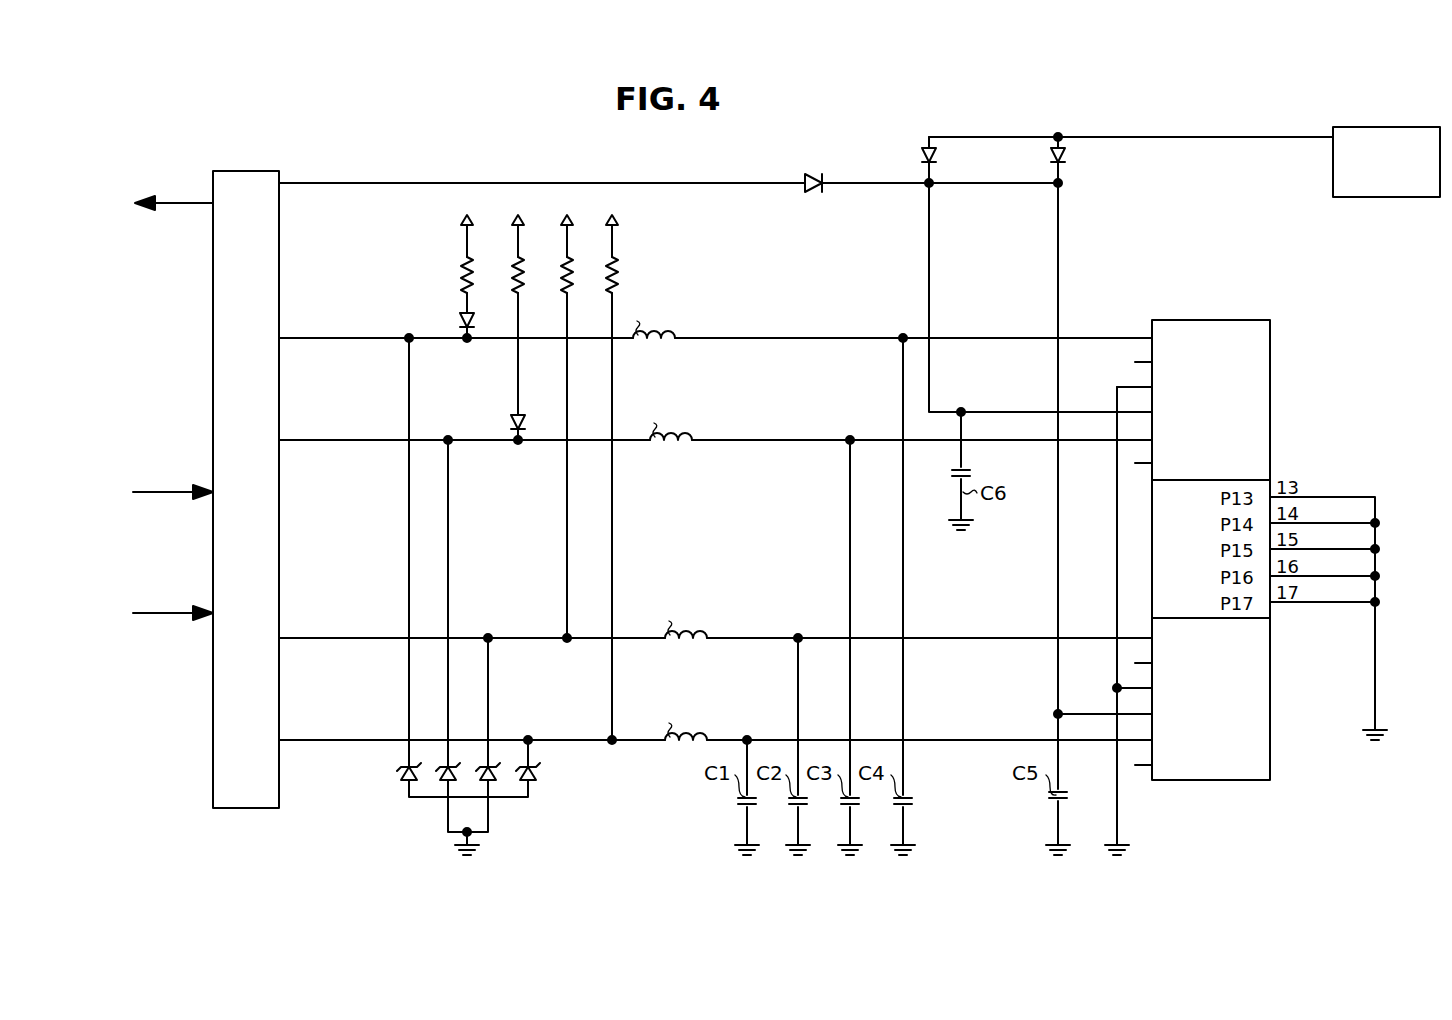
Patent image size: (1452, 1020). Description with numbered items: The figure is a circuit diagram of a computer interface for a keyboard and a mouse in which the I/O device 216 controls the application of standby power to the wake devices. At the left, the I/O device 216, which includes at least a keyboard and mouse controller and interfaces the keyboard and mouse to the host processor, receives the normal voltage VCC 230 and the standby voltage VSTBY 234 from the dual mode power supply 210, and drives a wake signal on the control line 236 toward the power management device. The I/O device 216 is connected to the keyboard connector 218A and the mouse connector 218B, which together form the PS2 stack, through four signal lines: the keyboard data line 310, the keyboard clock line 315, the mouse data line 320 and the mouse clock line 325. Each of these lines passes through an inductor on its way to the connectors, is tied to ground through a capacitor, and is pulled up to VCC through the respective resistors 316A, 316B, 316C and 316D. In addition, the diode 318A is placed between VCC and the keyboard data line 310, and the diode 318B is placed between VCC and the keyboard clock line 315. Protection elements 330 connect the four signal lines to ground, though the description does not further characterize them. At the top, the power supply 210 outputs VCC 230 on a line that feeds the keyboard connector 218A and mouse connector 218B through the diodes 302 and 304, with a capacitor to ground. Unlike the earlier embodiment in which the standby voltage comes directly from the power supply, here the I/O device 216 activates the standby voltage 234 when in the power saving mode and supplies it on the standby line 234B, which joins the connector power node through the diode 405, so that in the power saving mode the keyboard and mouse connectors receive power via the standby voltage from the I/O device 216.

The dual mode power supply 210 is at (1390, 127).
The input/output (I/O) device 216 is at (279, 222).
The keyboard connector 218A is at (1270, 328).
The mouse connector 218B is at (1225, 780).
The VCC input (normal voltage) 230 is at (1291, 140).
The standby voltage (VSTBY) 234 is at (166, 601).
The standby voltage line 234B is at (375, 183).
The control line 236 is at (174, 203).
The diode 302 is at (921, 155).
The diode 304 is at (1050, 155).
The keyboard data line (KBDATA) 310 is at (755, 338).
The keyboard clock line (KBCLOCK) 315 is at (756, 440).
The pull-up resistor 316A is at (461, 266).
The pull-up resistor 316B is at (510, 263).
The pull-up resistor 316C is at (560, 265).
The pull-up resistor 316D is at (617, 266).
The diode 318A is at (460, 312).
The diode 318B is at (512, 424).
The mouse data line (MDATA) 320 is at (747, 638).
The mouse clock line (MCLOCK) 325 is at (728, 740).
The transient voltage suppressor diode array 330 is at (488, 812).
The diode 405 is at (812, 178).